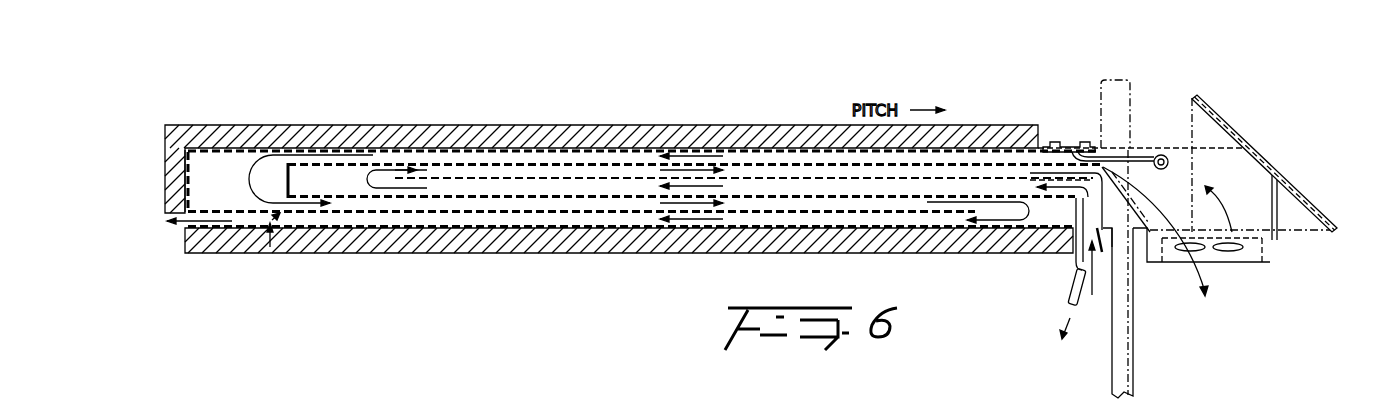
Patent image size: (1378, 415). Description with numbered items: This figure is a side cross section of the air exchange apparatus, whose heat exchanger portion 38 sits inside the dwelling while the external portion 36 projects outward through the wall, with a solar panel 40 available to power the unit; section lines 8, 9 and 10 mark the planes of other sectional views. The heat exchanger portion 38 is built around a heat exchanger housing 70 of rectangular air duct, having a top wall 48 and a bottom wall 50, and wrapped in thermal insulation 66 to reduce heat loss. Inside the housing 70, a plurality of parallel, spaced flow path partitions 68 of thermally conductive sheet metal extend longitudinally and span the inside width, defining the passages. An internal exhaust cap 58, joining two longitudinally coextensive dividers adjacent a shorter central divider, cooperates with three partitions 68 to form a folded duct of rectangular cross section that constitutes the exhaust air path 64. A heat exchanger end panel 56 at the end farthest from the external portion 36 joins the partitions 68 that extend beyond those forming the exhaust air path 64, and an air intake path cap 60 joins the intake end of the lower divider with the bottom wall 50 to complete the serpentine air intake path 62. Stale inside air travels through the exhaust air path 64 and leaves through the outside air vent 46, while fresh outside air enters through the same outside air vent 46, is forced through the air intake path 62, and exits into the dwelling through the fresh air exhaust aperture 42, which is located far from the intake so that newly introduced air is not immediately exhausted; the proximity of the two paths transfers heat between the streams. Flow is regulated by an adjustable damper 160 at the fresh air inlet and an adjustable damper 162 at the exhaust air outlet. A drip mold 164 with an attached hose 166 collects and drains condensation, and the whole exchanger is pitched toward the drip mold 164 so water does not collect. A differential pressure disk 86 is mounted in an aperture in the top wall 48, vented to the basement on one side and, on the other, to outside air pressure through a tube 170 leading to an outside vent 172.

The section line 8- 8 is at (640, 93).
The section line 9- 9 is at (1220, 34).
The section line 10- 10 is at (1216, 52).
The external portion 36 is at (1163, 139).
The heat exchanger portion 38 is at (773, 116).
The solar panel 40 is at (1222, 118).
The fresh air exhaust aperture 42 is at (185, 232).
The outside air vent 46 is at (1260, 258).
The top wall 48 is at (233, 147).
The bottom wall 50 is at (246, 236).
The heat exchanger end panel 56 is at (184, 170).
The internal exhaust cap 58 is at (288, 178).
The air intake path cap 60 is at (1075, 205).
The air intake path 62 is at (393, 224).
The exhaust air path 64 is at (492, 190).
The thermal insulation 66 is at (305, 147).
The flow path partitions 68 is at (388, 163).
The heat exchanger housing 70 is at (724, 240).
The pressure disk 86 is at (1065, 137).
The adjustable damper 160 is at (270, 247).
The adjustable damper 162 is at (1060, 255).
The drip mold 164 is at (1072, 266).
The hose 166 is at (1077, 308).
The tube 170 is at (1138, 158).
The outside vent 172 is at (1170, 165).